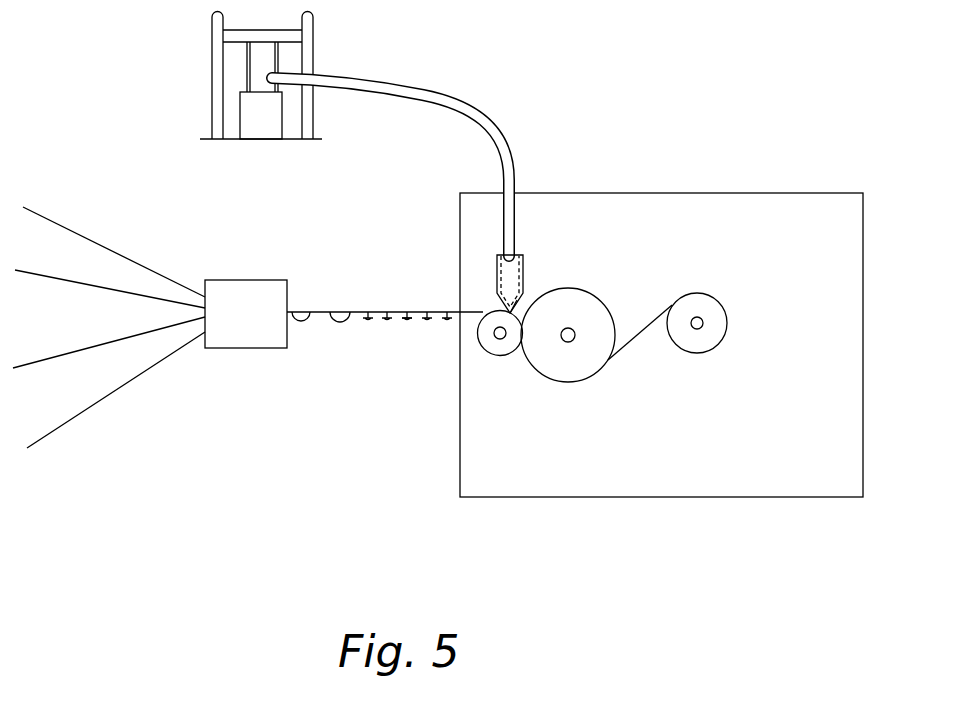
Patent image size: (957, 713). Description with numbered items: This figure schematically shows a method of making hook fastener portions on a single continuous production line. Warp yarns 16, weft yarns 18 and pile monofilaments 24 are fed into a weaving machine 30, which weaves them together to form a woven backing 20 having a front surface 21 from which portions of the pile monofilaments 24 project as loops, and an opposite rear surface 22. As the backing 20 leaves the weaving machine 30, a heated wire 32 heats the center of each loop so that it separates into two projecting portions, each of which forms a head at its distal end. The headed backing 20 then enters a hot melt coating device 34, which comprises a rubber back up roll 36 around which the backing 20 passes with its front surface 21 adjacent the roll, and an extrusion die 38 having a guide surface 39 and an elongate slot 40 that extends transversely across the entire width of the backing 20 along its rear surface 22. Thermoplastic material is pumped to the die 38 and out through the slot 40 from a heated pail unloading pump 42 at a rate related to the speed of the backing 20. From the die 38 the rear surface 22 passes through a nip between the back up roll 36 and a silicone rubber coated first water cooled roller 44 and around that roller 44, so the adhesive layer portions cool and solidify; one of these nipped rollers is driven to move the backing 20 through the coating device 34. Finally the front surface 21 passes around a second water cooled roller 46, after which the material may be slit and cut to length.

The warp yarns 16 is at (78, 233).
The weft yarns 18 is at (100, 287).
The pile monofilaments 24 is at (93, 407).
The weaving machine 30 is at (254, 329).
The woven backing 20 is at (373, 308).
The heated wire 32 is at (353, 328).
The rear surface 22 is at (418, 312).
The front surface 21 is at (398, 316).
The heated pail unloading pump 42 is at (315, 57).
The hot melt coating device 34 is at (677, 192).
The extrusion die 38 is at (497, 265).
The elongate slot 40 is at (523, 280).
The guide surface 39 is at (517, 300).
The rubber back up roll 36 is at (493, 345).
The first water cooled roller 44 is at (573, 373).
The second water cooled roller 46 is at (698, 345).